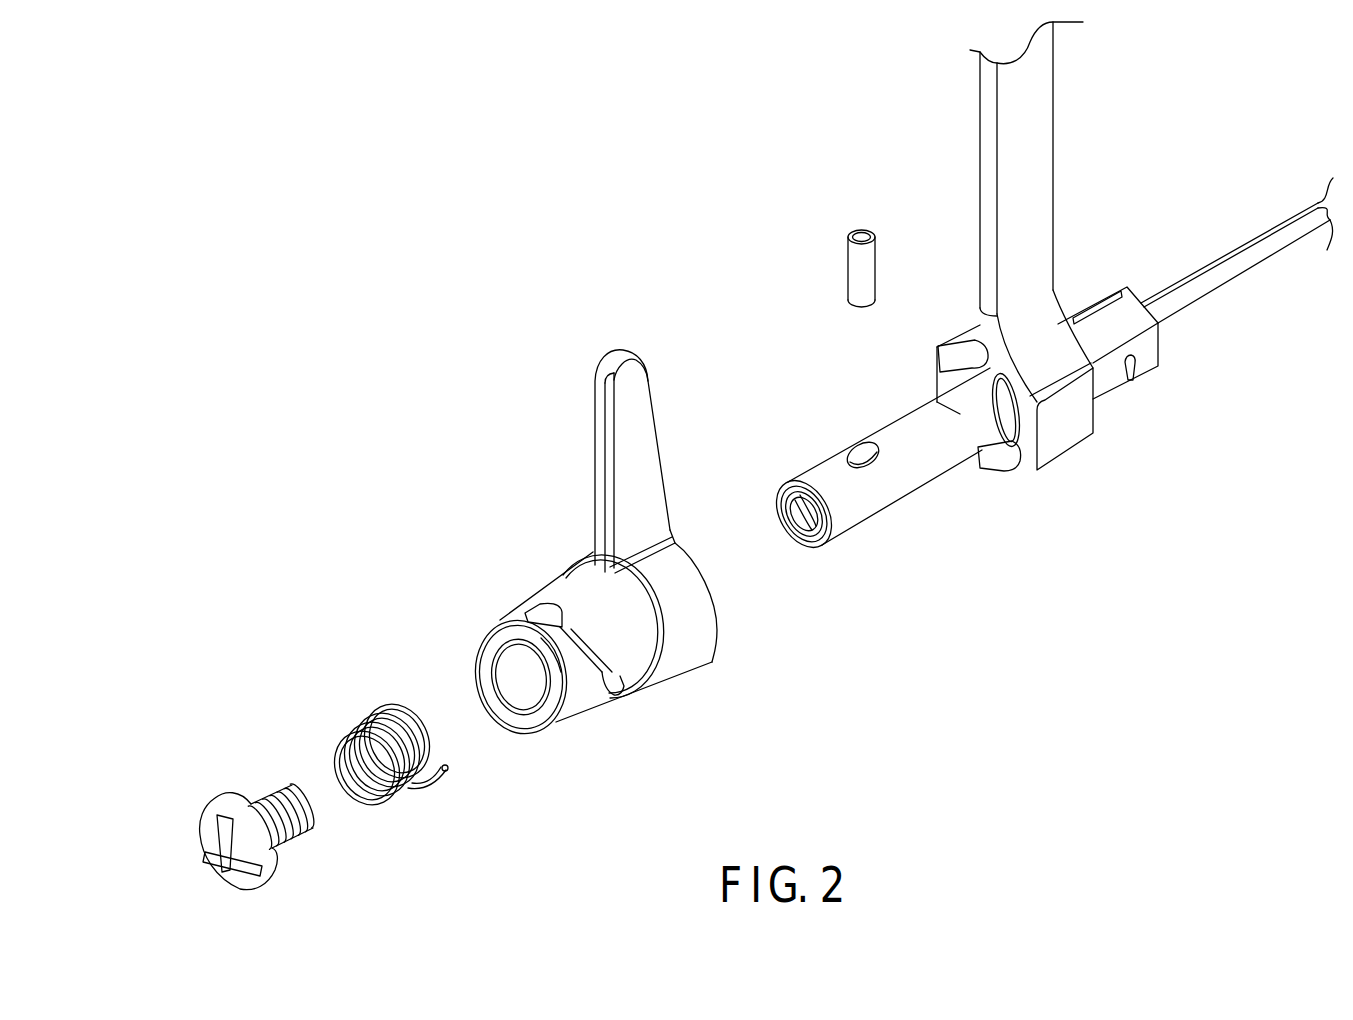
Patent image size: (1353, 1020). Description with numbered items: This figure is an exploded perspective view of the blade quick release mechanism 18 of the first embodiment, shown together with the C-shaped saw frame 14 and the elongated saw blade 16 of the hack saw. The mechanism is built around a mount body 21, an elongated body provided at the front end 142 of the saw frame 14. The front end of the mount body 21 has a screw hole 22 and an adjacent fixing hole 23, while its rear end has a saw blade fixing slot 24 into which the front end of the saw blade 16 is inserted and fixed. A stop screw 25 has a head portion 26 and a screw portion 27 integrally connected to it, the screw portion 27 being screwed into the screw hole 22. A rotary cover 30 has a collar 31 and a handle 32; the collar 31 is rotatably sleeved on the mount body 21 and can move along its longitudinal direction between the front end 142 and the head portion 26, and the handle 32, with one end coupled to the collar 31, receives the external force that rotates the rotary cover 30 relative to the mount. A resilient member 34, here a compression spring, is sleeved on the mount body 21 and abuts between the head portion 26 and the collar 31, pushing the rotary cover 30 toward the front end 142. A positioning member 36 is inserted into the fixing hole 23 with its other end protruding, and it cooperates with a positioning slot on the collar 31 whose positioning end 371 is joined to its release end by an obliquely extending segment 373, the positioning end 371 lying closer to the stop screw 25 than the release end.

The blade quick release mechanism 18 is at (340, 236).
The saw frame 14 is at (970, 132).
The saw blade 16 is at (1213, 280).
The saw blade fixing slot 24 is at (1098, 305).
The front end 142 is at (1072, 422).
The mount body 21 is at (877, 510).
The screw hole 22 is at (807, 520).
The fixing hole 23 is at (860, 453).
The positioning member 36 is at (853, 265).
The rotary cover 30 is at (440, 483).
The collar 31 is at (563, 590).
The handle 32 is at (630, 500).
The positioning end 371 is at (537, 607).
The obliquely extending segment 373 is at (593, 650).
The resilient member 34 is at (339, 685).
The stop screw 25 is at (135, 748).
The head portion 26 is at (208, 812).
The screw portion 27 is at (283, 787).